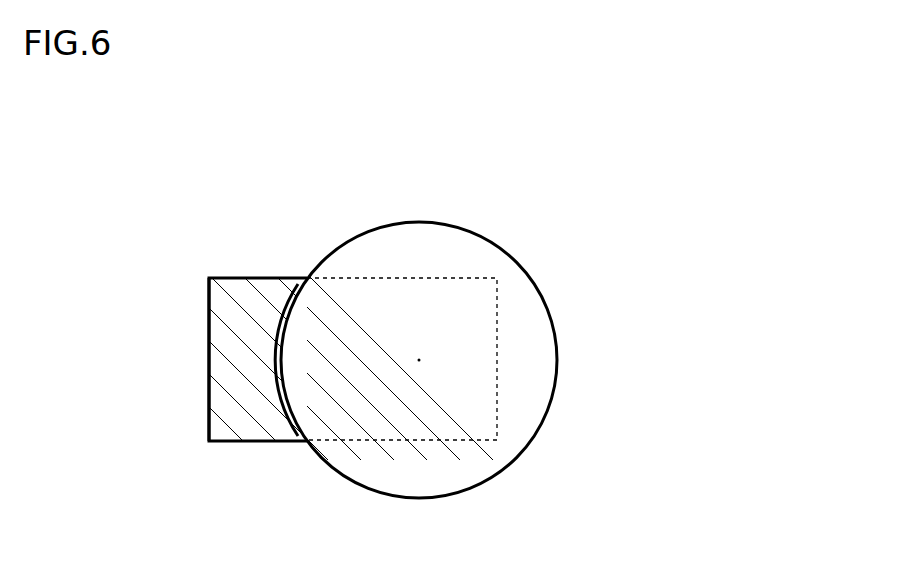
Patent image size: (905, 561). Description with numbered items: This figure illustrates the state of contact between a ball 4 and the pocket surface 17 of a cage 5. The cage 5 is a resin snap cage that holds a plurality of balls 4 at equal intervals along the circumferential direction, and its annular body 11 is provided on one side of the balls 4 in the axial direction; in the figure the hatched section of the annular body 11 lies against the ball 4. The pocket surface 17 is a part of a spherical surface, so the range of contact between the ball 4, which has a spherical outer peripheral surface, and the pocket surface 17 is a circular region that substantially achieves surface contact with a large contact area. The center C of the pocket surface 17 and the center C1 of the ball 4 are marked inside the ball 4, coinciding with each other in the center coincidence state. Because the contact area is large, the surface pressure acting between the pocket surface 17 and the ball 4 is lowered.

The ball 4 is at (535, 282).
The cage 5 is at (230, 277).
The annular body 11 is at (222, 340).
The pocket surface 17 is at (282, 359).
The center of the ball C1 is at (417, 359).
The center of the pocket surface C is at (421, 361).